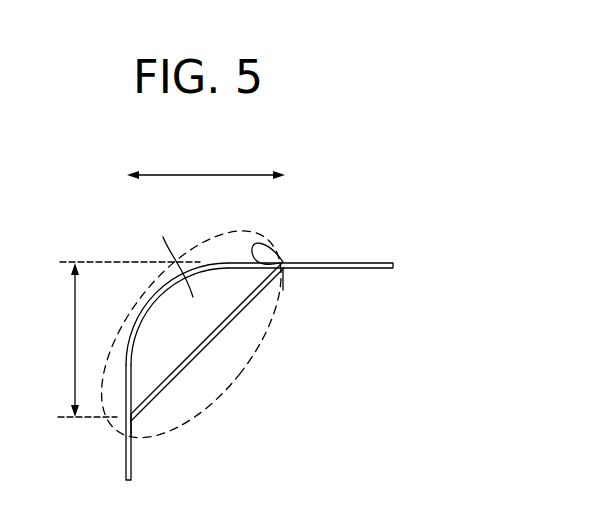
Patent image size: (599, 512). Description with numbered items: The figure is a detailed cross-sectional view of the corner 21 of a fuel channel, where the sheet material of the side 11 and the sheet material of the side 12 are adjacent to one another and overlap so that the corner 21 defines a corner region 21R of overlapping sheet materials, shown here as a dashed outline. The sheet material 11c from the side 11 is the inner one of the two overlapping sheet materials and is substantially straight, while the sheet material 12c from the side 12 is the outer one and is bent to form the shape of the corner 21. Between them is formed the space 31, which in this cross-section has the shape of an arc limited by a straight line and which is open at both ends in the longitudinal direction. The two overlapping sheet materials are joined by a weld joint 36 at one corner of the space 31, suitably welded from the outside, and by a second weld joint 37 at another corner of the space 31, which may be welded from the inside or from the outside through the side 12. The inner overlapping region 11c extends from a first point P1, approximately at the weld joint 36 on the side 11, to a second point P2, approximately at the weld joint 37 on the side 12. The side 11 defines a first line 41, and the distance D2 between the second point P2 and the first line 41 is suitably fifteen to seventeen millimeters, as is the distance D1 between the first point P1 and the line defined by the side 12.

The corner 21 is at (66, 247).
The side 11 is at (367, 262).
The side 12 is at (123, 461).
The overlapping sheet material 12c is at (136, 329).
The overlapping sheet material 11c is at (205, 347).
The first line 41 is at (97, 260).
The space 31 is at (170, 254).
The weld joint 36 is at (259, 243).
The second weld joint 37 is at (133, 418).
The corner region 21R is at (287, 307).
The first point P1 is at (283, 262).
The second point P2 is at (133, 437).
The distance D1 is at (206, 163).
The distance D2 is at (54, 340).